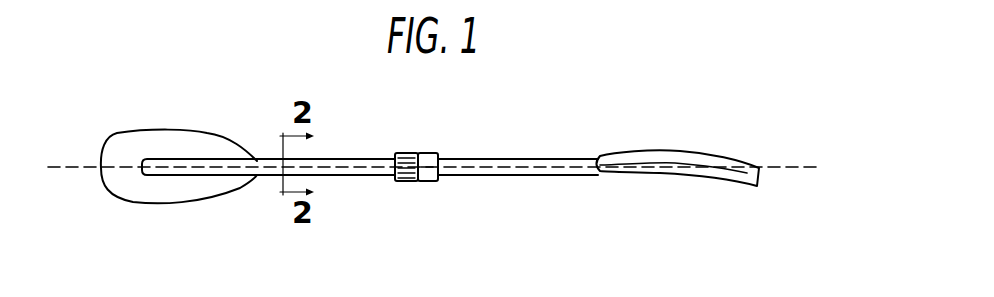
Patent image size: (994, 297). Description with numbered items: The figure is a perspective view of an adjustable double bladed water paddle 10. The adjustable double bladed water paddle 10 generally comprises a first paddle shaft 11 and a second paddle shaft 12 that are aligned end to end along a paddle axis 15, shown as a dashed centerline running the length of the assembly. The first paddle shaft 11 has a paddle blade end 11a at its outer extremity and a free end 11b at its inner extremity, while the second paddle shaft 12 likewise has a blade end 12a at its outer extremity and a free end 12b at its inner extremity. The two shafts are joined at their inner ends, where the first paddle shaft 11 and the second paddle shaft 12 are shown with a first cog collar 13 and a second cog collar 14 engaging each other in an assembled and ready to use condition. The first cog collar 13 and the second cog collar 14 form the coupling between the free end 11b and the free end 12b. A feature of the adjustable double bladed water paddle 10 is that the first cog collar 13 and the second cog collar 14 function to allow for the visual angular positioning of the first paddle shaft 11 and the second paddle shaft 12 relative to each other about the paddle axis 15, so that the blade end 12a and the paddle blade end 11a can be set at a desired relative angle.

The adjustable double bladed water paddle 10 is at (630, 122).
The first paddle shaft 11 is at (525, 174).
The paddle blade end 11a is at (721, 182).
The free end 11b is at (418, 182).
The second paddle shaft 12 is at (262, 176).
The blade end 12a is at (110, 195).
The free end 12b is at (415, 182).
The first cog collar 13 is at (427, 153).
The second cog collar 14 is at (404, 153).
The paddle axis 15 is at (781, 166).